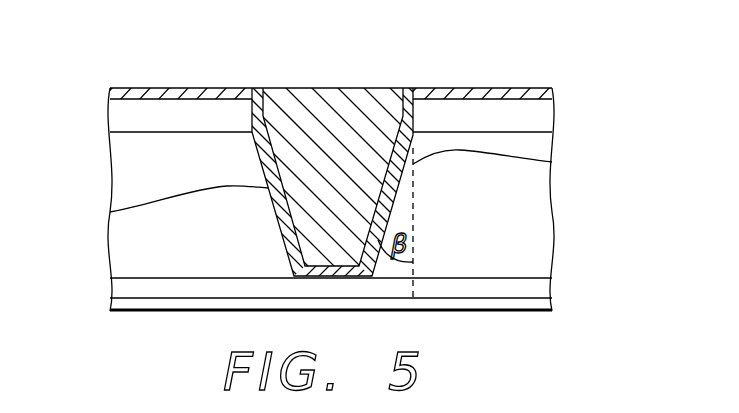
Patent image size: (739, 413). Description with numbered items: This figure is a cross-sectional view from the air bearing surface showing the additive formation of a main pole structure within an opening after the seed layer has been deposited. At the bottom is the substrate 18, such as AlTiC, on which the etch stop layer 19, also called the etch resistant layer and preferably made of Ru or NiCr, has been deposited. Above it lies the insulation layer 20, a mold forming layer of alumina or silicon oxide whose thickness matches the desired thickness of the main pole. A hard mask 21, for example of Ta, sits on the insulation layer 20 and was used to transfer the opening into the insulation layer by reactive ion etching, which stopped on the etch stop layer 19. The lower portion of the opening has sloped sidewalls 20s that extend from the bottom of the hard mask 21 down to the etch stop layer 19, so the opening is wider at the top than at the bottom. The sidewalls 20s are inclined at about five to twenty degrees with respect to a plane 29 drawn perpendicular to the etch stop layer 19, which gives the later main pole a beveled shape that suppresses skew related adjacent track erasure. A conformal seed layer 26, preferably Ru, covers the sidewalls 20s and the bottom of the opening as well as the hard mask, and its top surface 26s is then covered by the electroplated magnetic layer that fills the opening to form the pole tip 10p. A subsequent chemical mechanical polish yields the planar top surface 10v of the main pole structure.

The pole tip 10p is at (284, 117).
The planar top surface 10v is at (348, 88).
The substrate 18 is at (112, 308).
The etch stop layer 19 is at (540, 293).
The insulation layer 20 is at (115, 235).
The sloped sidewalls 20s is at (110, 211).
The hard mask 21 is at (112, 118).
The seed layer 26 is at (555, 91).
The top surface of seed layer 26s is at (116, 87).
The plane 29 is at (556, 161).